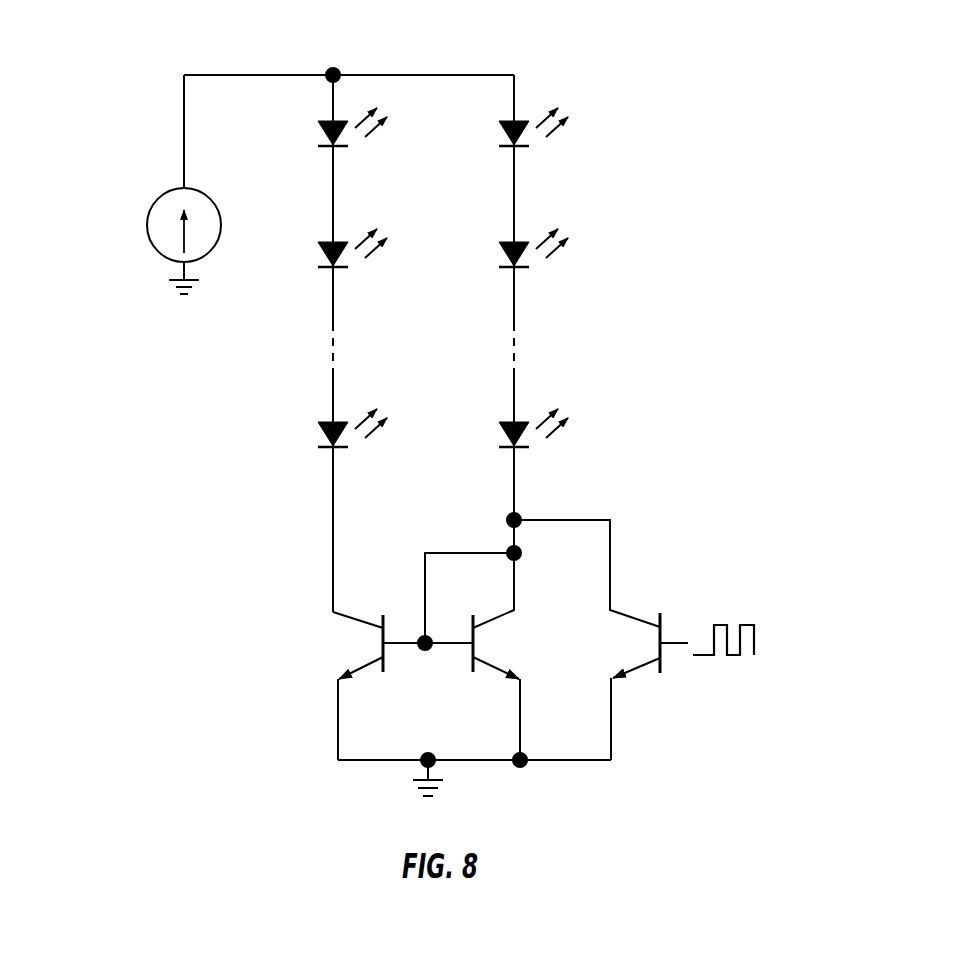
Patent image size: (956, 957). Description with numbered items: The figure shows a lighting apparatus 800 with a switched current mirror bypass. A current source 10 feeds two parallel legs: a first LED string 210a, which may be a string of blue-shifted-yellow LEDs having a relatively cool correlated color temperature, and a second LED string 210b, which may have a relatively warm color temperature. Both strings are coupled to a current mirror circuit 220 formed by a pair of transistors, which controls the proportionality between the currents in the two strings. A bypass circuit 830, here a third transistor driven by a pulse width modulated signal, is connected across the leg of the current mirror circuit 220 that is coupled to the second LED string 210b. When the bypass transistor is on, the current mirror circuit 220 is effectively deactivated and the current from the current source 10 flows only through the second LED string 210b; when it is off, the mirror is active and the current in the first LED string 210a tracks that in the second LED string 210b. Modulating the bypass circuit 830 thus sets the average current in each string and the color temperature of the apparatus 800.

The lighting apparatus 800 is at (732, 121).
The current source 10 is at (148, 228).
The first LED string 210a is at (349, 224).
The second LED string 210b is at (567, 213).
The current mirror circuit 220 is at (312, 722).
The bypass circuit 830 is at (684, 596).